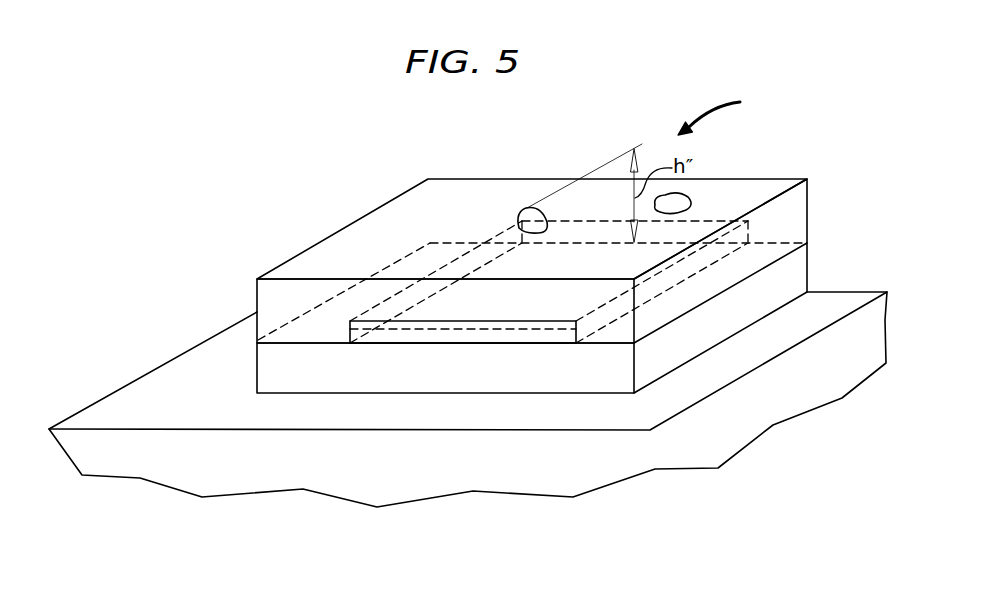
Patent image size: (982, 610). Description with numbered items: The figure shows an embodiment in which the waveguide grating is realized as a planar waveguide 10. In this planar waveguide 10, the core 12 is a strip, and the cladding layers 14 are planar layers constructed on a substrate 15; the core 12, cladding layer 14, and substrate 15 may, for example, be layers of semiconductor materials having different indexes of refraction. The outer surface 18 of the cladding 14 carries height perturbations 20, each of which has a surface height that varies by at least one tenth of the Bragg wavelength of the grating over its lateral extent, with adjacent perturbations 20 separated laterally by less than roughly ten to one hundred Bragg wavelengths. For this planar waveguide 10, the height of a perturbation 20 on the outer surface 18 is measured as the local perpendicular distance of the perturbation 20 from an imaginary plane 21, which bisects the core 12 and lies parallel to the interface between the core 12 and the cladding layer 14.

The planar waveguide 10 is at (730, 113).
The core 12 is at (490, 343).
The cladding layer 14 is at (807, 207).
The substrate 15 is at (185, 418).
The outer surface 18 is at (423, 205).
The height perturbation 20 is at (528, 208).
The imaginary plane 21 is at (340, 287).